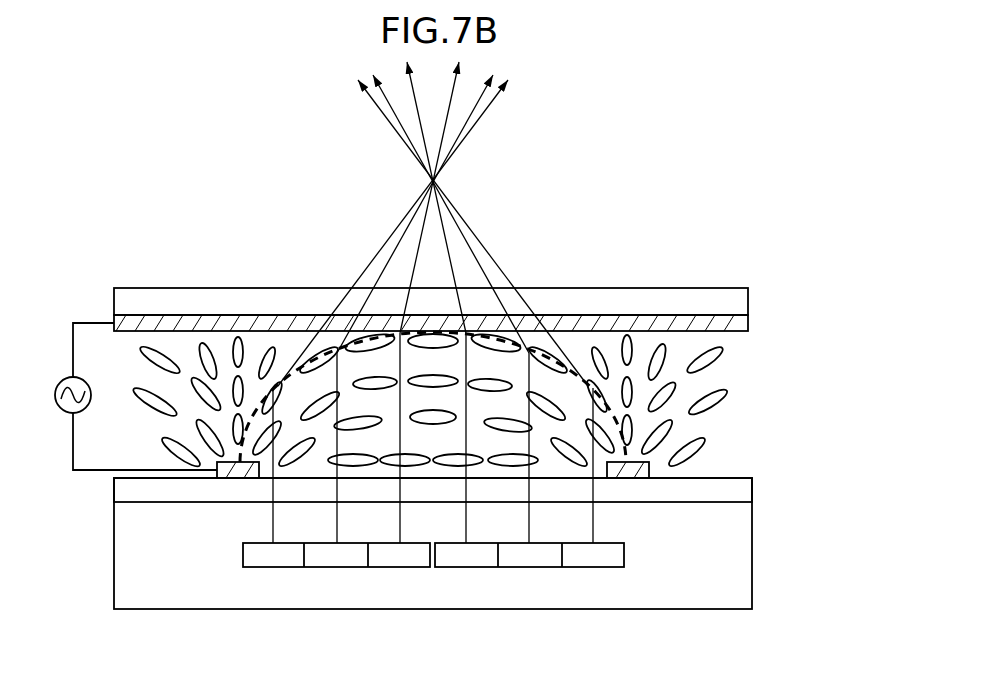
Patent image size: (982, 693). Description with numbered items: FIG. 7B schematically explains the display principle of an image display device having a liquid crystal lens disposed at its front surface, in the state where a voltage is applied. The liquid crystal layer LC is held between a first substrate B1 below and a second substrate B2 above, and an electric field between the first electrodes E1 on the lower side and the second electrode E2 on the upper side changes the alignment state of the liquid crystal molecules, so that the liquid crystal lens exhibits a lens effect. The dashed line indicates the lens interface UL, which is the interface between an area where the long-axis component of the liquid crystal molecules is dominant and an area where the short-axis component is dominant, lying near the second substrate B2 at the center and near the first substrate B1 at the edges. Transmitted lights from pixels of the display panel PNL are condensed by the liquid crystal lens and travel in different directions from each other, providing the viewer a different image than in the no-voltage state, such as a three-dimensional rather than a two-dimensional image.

The second substrate B2 is at (738, 302).
The second electrode E2 is at (740, 323).
The lens interface UL is at (612, 430).
The liquid crystal layer LC is at (740, 395).
The first electrodes E1 is at (640, 473).
The first substrate B1 is at (738, 488).
The display panel PNL is at (738, 552).